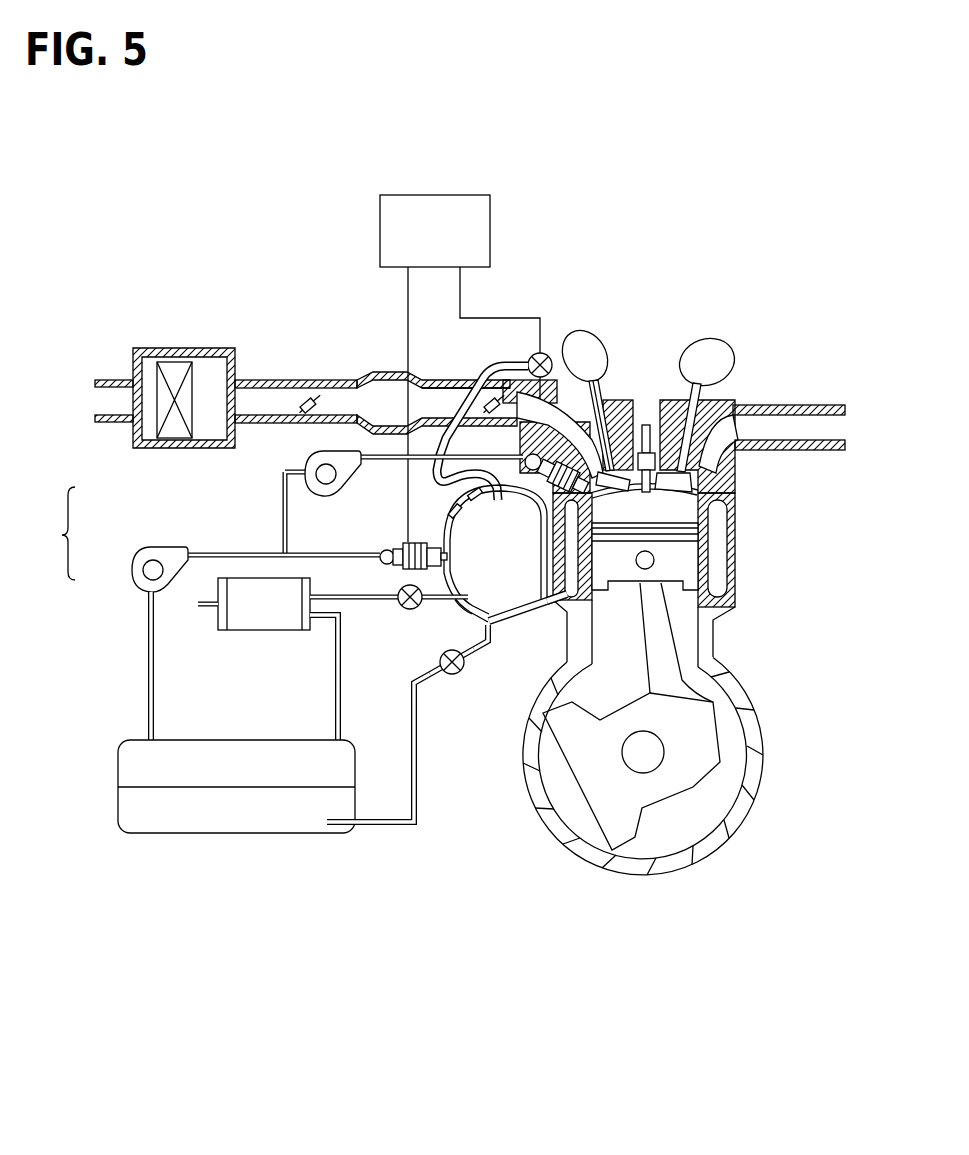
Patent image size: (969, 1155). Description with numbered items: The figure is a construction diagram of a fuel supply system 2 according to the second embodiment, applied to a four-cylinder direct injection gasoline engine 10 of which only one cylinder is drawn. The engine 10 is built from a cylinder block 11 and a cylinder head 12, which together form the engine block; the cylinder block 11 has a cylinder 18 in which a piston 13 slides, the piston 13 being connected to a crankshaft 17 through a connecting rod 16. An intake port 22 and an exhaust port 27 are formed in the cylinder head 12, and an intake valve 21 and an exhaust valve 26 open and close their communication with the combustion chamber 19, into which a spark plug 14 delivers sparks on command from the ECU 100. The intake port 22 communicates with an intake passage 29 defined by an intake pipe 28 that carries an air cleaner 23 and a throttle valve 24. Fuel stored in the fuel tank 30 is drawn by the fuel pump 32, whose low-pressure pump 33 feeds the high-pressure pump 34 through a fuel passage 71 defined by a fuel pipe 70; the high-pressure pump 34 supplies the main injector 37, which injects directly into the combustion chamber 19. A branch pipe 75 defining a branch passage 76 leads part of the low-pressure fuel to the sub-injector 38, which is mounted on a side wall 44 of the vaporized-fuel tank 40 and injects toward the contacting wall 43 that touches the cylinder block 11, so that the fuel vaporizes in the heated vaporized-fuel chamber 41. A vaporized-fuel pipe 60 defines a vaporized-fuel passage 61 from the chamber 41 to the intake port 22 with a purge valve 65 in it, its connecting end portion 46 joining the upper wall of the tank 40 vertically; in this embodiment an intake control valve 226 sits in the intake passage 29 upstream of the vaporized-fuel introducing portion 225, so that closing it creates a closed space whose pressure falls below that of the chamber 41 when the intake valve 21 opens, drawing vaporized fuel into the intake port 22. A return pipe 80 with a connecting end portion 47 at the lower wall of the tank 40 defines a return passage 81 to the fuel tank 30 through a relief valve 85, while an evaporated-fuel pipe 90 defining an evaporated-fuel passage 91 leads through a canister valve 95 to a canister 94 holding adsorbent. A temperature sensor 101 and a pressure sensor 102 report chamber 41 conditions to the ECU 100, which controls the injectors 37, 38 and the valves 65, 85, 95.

The fuel supply system 2 is at (218, 922).
The engine 10 is at (733, 886).
The cylinder block 11 is at (738, 553).
The cylinder head 12 is at (727, 470).
The piston 13 is at (688, 576).
The spark plug 14 is at (645, 424).
The connecting rod 16 is at (667, 672).
The crankshaft 17 is at (652, 748).
The cylinder 18 is at (687, 520).
The combustion chamber 19 is at (690, 500).
The intake valve 21 is at (581, 332).
The intake port 22 is at (624, 418).
The air cleaner 23 is at (178, 370).
The throttle valve 24 is at (301, 405).
The exhaust valve 26 is at (722, 407).
The exhaust port 27 is at (808, 423).
The intake pipe 28 is at (243, 380).
The intake passage 29 is at (277, 398).
The fuel tank 30 is at (322, 838).
The fuel pump 32 is at (56, 533).
The low-pressure pump 33 is at (132, 568).
The high-pressure pump 34 is at (303, 460).
The main injector 37 is at (559, 377).
The sub-injector 38 is at (393, 571).
The vaporized-fuel tank 40 is at (518, 616).
The vaporized-fuel chamber 41 is at (483, 603).
The contacting wall 43 is at (550, 601).
The side wall 44 is at (472, 601).
The connecting end portion 46 is at (512, 470).
The connecting end portion 47 is at (488, 628).
The vaporized-fuel pipe 60 is at (410, 390).
The vaporized-fuel passage 61 is at (440, 444).
The purge valve 65 is at (540, 350).
The fuel pipe 70 is at (148, 697).
The fuel passage 71 is at (148, 668).
The branch pipe 75 is at (292, 548).
The branch passage 76 is at (300, 558).
The return pipe 80 is at (410, 737).
The return passage 81 is at (410, 705).
The relief valve 85 is at (440, 662).
The evaporated-fuel pipe 90 is at (335, 707).
The evaporated-fuel passage 91 is at (335, 673).
The canister 94 is at (238, 633).
The canister valve 95 is at (402, 607).
The electronic control unit 100 is at (380, 233).
The temperature sensor 101 is at (468, 495).
The pressure sensor 102 is at (450, 512).
The vaporized-fuel introducing portion 225 is at (554, 377).
The intake control valve 226 is at (496, 395).